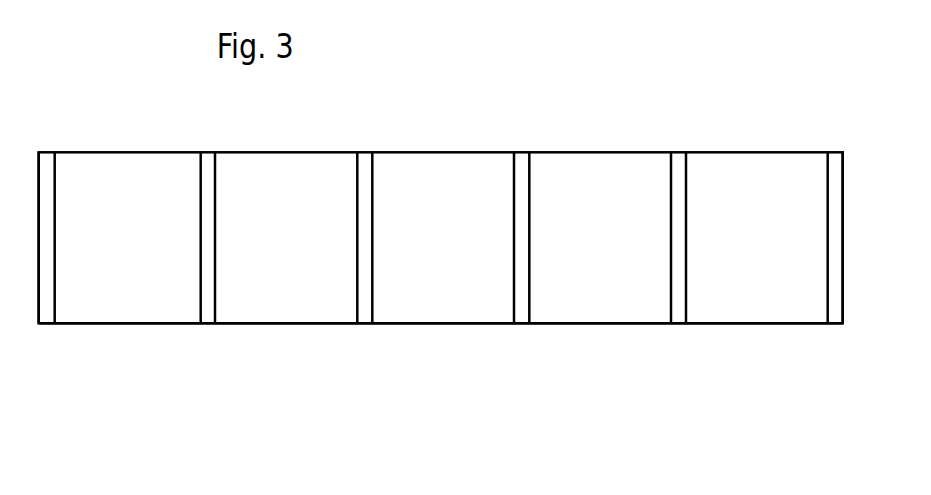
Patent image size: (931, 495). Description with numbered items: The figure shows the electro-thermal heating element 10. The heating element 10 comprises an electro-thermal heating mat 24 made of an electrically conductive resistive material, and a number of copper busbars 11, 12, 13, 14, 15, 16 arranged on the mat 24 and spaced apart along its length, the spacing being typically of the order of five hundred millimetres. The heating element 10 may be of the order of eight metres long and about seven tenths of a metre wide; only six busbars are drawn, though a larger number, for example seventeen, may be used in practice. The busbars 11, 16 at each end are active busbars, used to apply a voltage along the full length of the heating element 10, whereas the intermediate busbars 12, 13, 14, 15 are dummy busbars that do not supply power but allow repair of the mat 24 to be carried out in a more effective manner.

The heating element 10 is at (506, 118).
The active busbar 11 is at (55, 238).
The dummy busbar 12 is at (201, 238).
The dummy busbar 13 is at (373, 238).
The dummy busbar 14 is at (519, 238).
The dummy busbar 15 is at (682, 238).
The active busbar 16 is at (828, 238).
The electro-thermal heating mat 24 is at (268, 308).